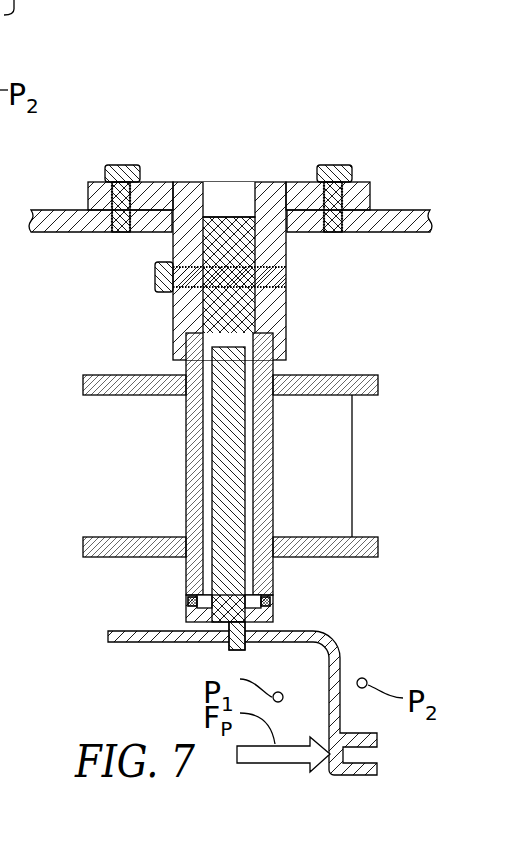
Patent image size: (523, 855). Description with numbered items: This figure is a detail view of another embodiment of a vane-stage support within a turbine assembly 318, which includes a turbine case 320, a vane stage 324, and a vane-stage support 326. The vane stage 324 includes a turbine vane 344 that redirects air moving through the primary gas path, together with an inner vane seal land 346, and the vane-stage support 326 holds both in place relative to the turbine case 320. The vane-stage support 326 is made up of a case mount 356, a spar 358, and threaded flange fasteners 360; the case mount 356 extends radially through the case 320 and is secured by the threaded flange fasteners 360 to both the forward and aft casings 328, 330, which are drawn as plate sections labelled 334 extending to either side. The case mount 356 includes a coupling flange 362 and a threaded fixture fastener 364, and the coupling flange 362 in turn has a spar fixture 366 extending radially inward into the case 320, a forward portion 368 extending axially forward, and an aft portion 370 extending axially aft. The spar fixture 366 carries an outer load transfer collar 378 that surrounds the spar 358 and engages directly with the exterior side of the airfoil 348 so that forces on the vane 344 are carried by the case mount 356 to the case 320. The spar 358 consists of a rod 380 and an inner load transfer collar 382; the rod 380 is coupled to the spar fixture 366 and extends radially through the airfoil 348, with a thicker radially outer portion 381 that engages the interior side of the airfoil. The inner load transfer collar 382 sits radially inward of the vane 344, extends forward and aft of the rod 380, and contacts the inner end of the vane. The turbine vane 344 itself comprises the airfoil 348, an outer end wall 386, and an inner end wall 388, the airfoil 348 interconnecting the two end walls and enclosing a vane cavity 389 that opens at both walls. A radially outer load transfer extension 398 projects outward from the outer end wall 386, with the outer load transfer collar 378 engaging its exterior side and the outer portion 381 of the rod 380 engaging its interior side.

The turbine assembly 318 is at (403, 88).
The turbine case 320 is at (427, 162).
The vane stage 324 is at (141, 683).
The vane-stage support 326 is at (384, 336).
The forward casing 328 is at (64, 195).
The aft casing 330 is at (385, 195).
The plate 334 is at (250, 172).
The turbine vane 344 is at (334, 501).
The inner vane seal land 346 is at (359, 624).
The airfoil 348 is at (273, 435).
The case mount 356 is at (358, 264).
The spar 358 is at (191, 417).
The threaded flange fasteners 360 is at (122, 164).
The coupling flange 362 is at (223, 138).
The threaded fixture fastener 364 is at (153, 277).
The spar fixture 366 is at (307, 301).
The forward portion 368 is at (165, 182).
The aft portion 370 is at (293, 182).
The outer load transfer collar 378 is at (173, 338).
The rod 380 is at (200, 454).
The radially outer portion 381 is at (173, 302).
The inner load transfer collar 382 is at (170, 615).
The outer end wall 386 is at (378, 383).
The inner end wall 388 is at (378, 545).
The vane cavity 389 is at (205, 549).
The radially outer load transfer extension 398 is at (287, 342).